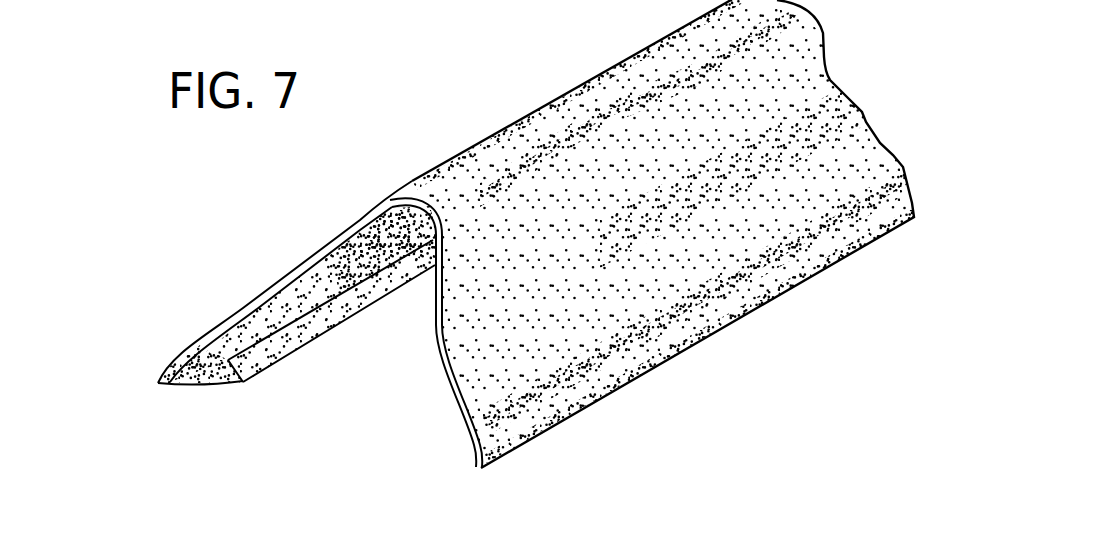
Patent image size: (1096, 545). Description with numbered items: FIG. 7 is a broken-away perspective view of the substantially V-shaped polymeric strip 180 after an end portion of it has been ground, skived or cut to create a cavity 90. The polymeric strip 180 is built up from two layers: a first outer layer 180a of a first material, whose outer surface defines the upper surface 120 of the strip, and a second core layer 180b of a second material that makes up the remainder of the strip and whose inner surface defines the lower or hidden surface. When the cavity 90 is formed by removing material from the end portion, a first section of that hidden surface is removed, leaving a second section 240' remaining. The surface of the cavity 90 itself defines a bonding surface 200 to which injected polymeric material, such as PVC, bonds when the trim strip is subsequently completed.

The upper surface 120 is at (807, 75).
The polymeric strip 180 is at (488, 116).
The first outer layer 180a is at (170, 363).
The second core layer 180b is at (200, 365).
The bonding surface 200 is at (257, 322).
The cavity 90 is at (343, 258).
The second section 240' is at (331, 319).